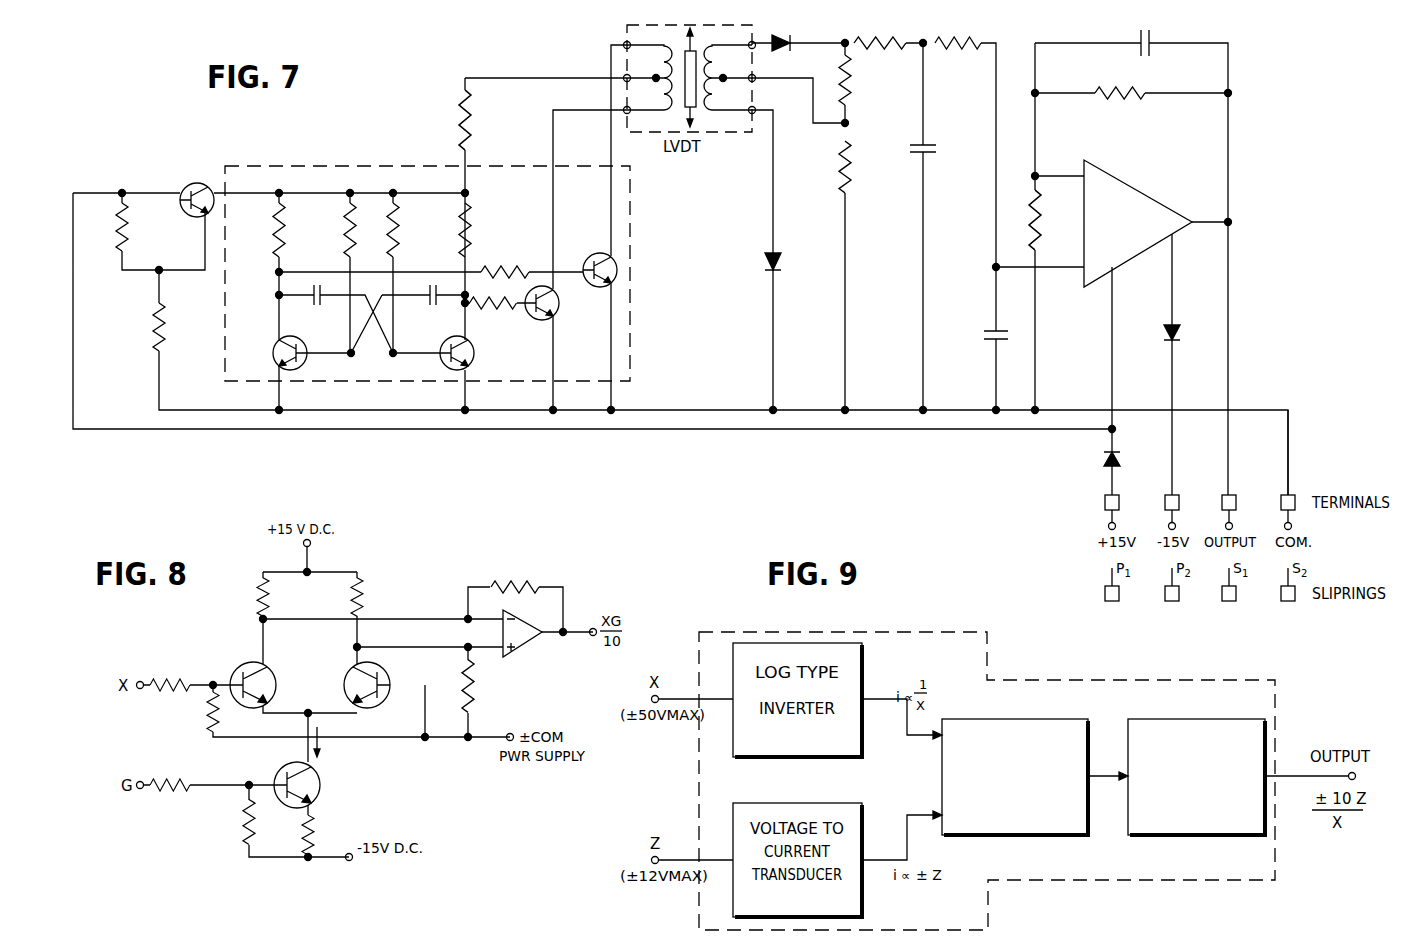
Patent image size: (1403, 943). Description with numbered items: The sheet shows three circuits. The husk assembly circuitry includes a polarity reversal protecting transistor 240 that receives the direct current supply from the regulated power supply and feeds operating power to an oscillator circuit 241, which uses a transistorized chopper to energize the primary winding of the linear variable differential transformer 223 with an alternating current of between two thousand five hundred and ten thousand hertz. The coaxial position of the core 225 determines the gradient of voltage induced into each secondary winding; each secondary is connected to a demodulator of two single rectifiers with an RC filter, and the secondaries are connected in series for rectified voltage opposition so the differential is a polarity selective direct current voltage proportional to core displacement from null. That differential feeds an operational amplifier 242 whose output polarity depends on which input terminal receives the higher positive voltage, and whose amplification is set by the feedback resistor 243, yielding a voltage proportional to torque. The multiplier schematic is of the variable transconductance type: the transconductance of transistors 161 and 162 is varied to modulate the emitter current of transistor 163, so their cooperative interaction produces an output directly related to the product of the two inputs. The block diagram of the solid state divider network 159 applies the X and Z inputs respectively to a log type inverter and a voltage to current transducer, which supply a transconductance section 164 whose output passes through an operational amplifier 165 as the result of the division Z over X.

In FIG. 7, the polarity reversal protecting transistor 240 is at (192, 190).
In FIG. 7, the oscillator circuit 241 is at (298, 163).
In FIG. 7, the linear variable differential transformer 223 is at (650, 133).
In FIG. 7, the core 225 is at (698, 110).
In FIG. 7, the feedback resistor 243 is at (1137, 107).
In FIG. 7, the operational amplifier 242 is at (1164, 192).
In FIG. 8, the transistor 161 is at (289, 675).
In FIG. 8, the transistor 162 is at (346, 682).
In FIG. 8, the transistor 163 is at (319, 795).
In FIG. 9, the solid state divider network 159 is at (935, 632).
In FIG. 9, the transconductance section 164 is at (1035, 719).
In FIG. 9, the operational amplifier 165 is at (1210, 719).